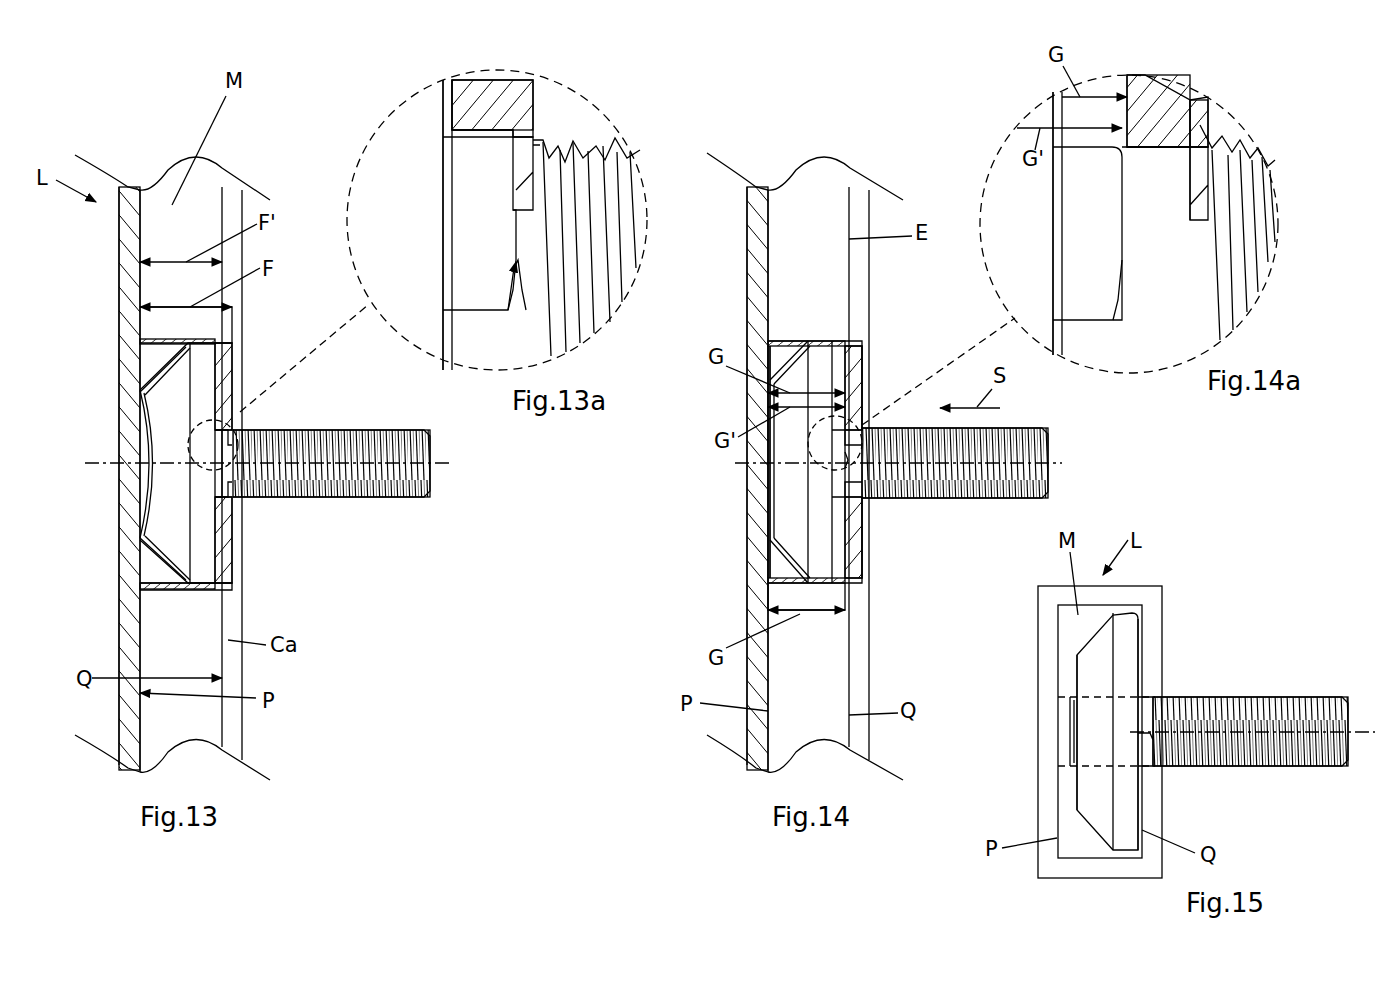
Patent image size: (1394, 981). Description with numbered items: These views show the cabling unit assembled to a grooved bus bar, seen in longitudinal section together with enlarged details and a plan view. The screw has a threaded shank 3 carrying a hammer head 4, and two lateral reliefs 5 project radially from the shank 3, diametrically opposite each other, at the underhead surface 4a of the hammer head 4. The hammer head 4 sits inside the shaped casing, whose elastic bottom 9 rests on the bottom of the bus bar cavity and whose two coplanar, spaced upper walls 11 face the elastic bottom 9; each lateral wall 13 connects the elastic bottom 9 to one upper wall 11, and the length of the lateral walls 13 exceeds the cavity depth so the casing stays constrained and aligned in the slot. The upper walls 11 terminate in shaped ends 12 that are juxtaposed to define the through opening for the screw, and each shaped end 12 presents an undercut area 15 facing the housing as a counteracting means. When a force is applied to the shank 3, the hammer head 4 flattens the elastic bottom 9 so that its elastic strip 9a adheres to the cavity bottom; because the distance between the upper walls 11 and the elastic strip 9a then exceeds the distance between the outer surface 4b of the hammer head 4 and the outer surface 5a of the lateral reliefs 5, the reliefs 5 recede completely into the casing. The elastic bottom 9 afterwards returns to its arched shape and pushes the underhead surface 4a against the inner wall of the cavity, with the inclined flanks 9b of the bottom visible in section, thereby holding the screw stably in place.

In FIG. 13, the threaded shank 3 is at (343, 490).
In FIG. 14, the threaded shank 3 is at (1006, 448).
In FIG. 15, the threaded shank 3 is at (1290, 712).
In FIG. 13, the hammer head 4 is at (166, 400).
In FIG. 13A, the hammer head 4 is at (393, 162).
In FIG. 14, the hammer head 4 is at (782, 478).
In FIG. 14A, the hammer head 4 is at (1010, 243).
In FIG. 15, the hammer head 4 is at (1097, 670).
In FIG. 15, the underhead surface 4a is at (1140, 804).
In FIG. 14, the outer surface of the hammer head 4b is at (768, 446).
In FIG. 15, the outer surface of the hammer head 4b is at (1070, 680).
In FIG. 13, the lateral relief 5 is at (222, 438).
In FIG. 13A, the lateral relief 5 is at (477, 280).
In FIG. 14, the lateral relief 5 is at (838, 450).
In FIG. 14A, the lateral relief 5 is at (1107, 306).
In FIG. 15, the lateral relief 5 is at (1146, 750).
In FIG. 13A, the outer surface of the lateral relief 5a is at (522, 300).
In FIG. 14, the outer surface of the lateral relief 5a is at (847, 452).
In FIG. 14A, the outer surface of the lateral relief 5a is at (1125, 268).
In FIG. 13, the elastic bottom 9 is at (136, 455).
In FIG. 15, the elastic bottom 9 is at (1060, 729).
In FIG. 13, the elastic strip 9a is at (150, 490).
In FIG. 14, the elastic strip 9a is at (766, 506).
In FIG. 15, the elastic strip 9a is at (1073, 750).
In FIG. 13, the inclined flanks 9b is at (165, 363).
In FIG. 13, the upper wall 11 is at (223, 463).
In FIG. 13A, the upper wall 11 is at (512, 100).
In FIG. 14, the upper wall 11 is at (858, 548).
In FIG. 14A, the upper wall 11 is at (1181, 112).
In FIG. 13A, the shaped end 12 is at (522, 188).
In FIG. 14A, the shaped end 12 is at (1198, 176).
In FIG. 13, the lateral wall 13 is at (160, 340).
In FIG. 14A, the undercut area 15 is at (1160, 174).